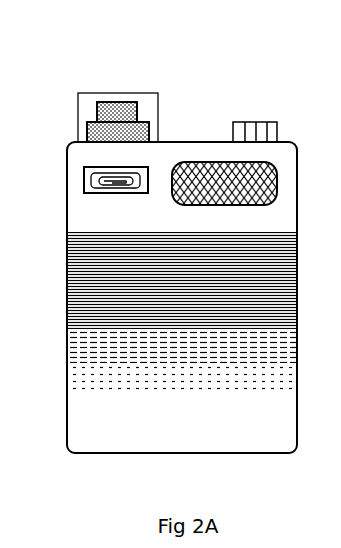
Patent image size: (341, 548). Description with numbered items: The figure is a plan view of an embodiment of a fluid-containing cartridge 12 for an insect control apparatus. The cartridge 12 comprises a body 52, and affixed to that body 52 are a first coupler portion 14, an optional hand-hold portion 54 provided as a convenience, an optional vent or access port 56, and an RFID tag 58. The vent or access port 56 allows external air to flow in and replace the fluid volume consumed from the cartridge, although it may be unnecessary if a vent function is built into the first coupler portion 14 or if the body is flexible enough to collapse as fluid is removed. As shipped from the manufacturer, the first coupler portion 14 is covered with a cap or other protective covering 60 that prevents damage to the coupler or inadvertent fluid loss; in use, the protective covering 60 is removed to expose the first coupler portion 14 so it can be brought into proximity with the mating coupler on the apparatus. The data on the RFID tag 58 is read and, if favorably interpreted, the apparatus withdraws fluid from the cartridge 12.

The fluid-containing cartridge 12 is at (193, 113).
The first coupler portion 14 is at (95, 111).
The body 52 is at (67, 248).
The hand-hold portion 54 is at (213, 140).
The vent or access port 56 is at (263, 118).
The RFID tag 58 is at (83, 175).
The protective covering 60 is at (161, 91).